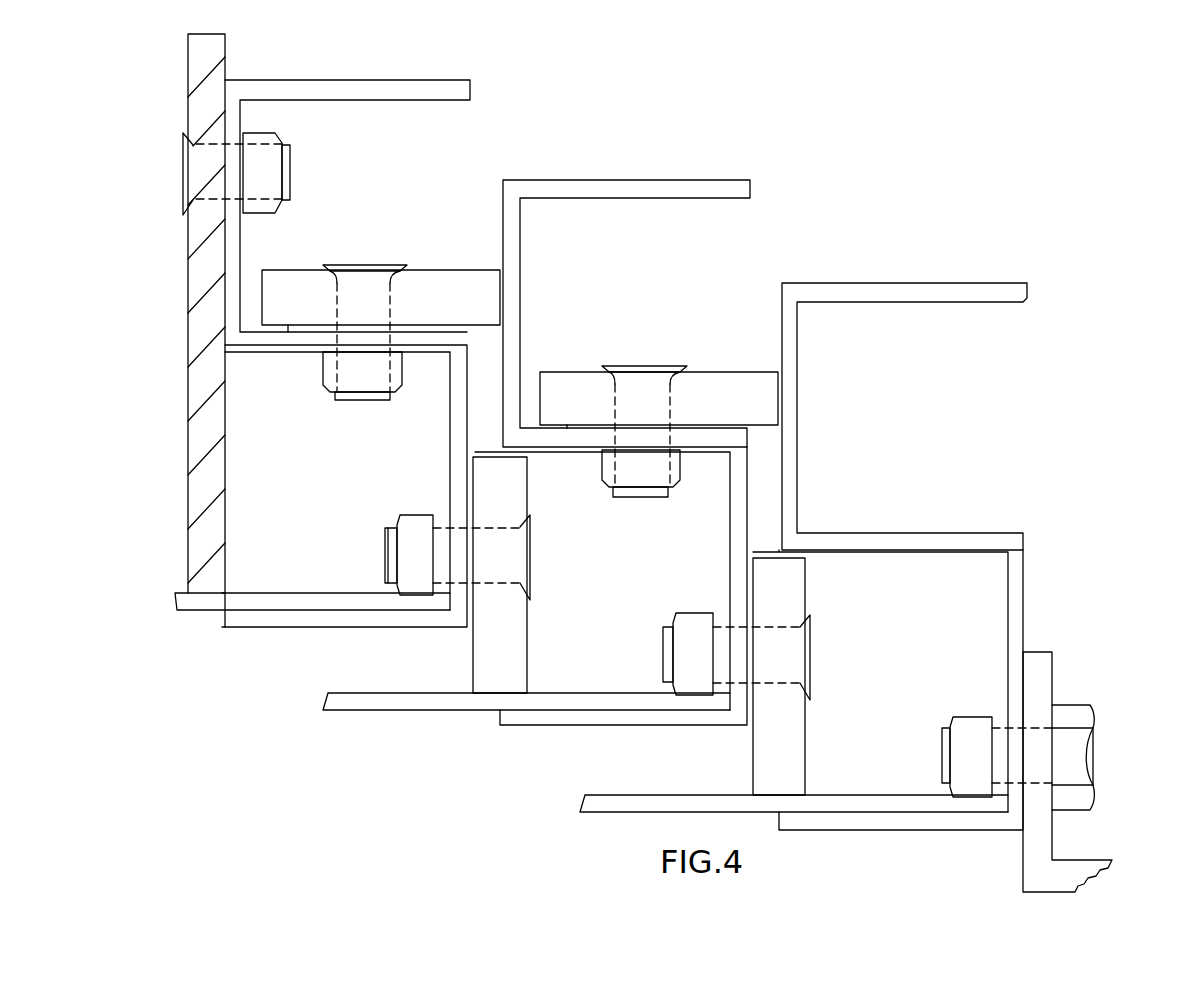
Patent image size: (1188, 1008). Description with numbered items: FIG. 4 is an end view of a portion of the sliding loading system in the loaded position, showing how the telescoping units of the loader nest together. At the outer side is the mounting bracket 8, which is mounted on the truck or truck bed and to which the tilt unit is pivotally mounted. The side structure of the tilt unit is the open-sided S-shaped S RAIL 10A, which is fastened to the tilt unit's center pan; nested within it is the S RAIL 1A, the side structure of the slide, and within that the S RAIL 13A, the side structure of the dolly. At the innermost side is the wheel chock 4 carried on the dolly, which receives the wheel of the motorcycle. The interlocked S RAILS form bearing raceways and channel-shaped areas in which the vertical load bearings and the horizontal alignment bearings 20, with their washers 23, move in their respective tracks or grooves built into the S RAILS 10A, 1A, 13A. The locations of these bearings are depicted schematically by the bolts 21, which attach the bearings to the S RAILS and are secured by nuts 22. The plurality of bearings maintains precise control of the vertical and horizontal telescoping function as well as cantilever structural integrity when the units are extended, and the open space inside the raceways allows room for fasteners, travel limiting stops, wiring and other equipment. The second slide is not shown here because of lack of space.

The chock 4 is at (227, 68).
The S RAIL 13A is at (470, 90).
The nut 22 is at (260, 133).
The bolt 21 is at (371, 265).
The bearing 20 is at (448, 307).
The S RAIL 1A is at (745, 180).
The washer 23 is at (467, 630).
The S RAIL 10A is at (1021, 284).
The bracket 8 is at (1033, 660).